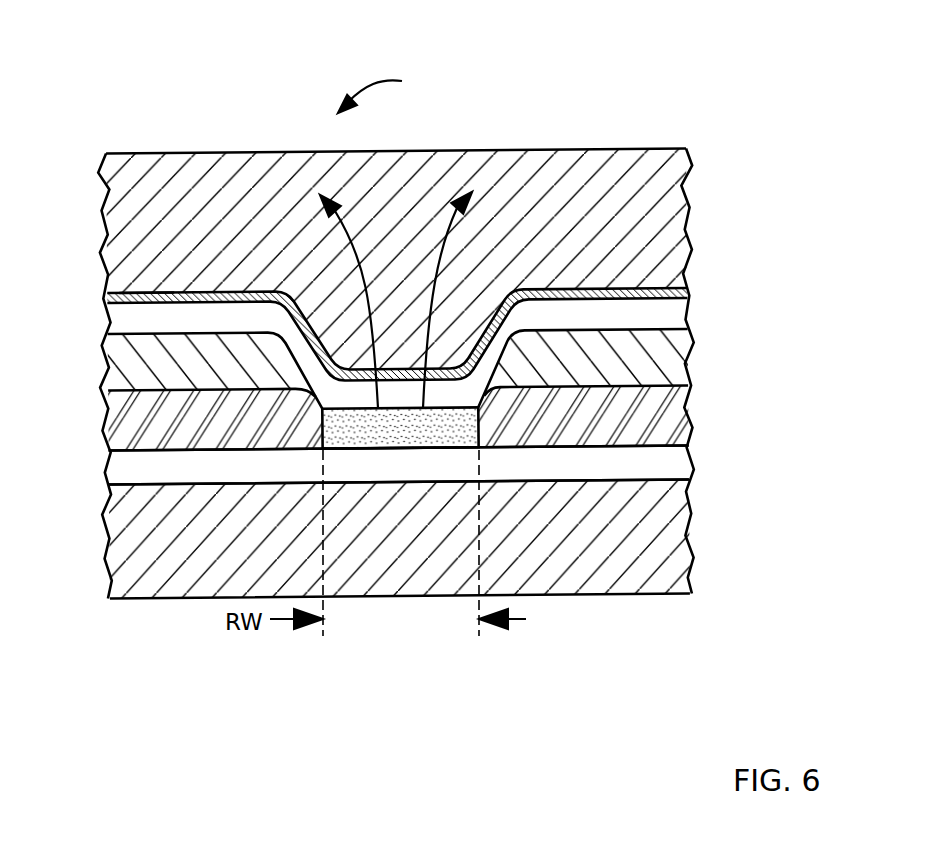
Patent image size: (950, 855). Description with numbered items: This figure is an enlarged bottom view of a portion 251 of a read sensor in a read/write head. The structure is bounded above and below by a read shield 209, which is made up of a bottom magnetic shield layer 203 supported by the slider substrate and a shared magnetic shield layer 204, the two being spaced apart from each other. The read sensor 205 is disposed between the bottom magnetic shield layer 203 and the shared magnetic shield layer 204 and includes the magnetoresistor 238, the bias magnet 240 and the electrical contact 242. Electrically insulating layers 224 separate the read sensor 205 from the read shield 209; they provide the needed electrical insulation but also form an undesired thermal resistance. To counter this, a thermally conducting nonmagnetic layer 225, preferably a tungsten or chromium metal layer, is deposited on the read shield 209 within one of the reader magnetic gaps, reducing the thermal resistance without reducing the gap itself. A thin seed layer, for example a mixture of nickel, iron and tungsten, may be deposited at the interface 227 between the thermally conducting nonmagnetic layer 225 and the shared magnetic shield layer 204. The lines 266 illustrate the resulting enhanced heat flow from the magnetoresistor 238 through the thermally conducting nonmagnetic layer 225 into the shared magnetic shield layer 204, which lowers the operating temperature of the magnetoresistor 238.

The read shield 209 is at (568, 68).
The bottom magnetic shield layer 203 is at (558, 520).
The shared magnetic shield layer 204 is at (634, 190).
The thermally conducting nonmagnetic layer 225 is at (685, 295).
The interface 227 is at (147, 292).
The electrically insulating layers 224 is at (672, 319).
The read sensor 205 is at (96, 335).
The electrical contact 242 is at (673, 365).
The bias magnet 240 is at (690, 412).
The magnetoresistor 238 is at (335, 430).
The lines 266 is at (424, 290).
The portion 251 is at (393, 91).